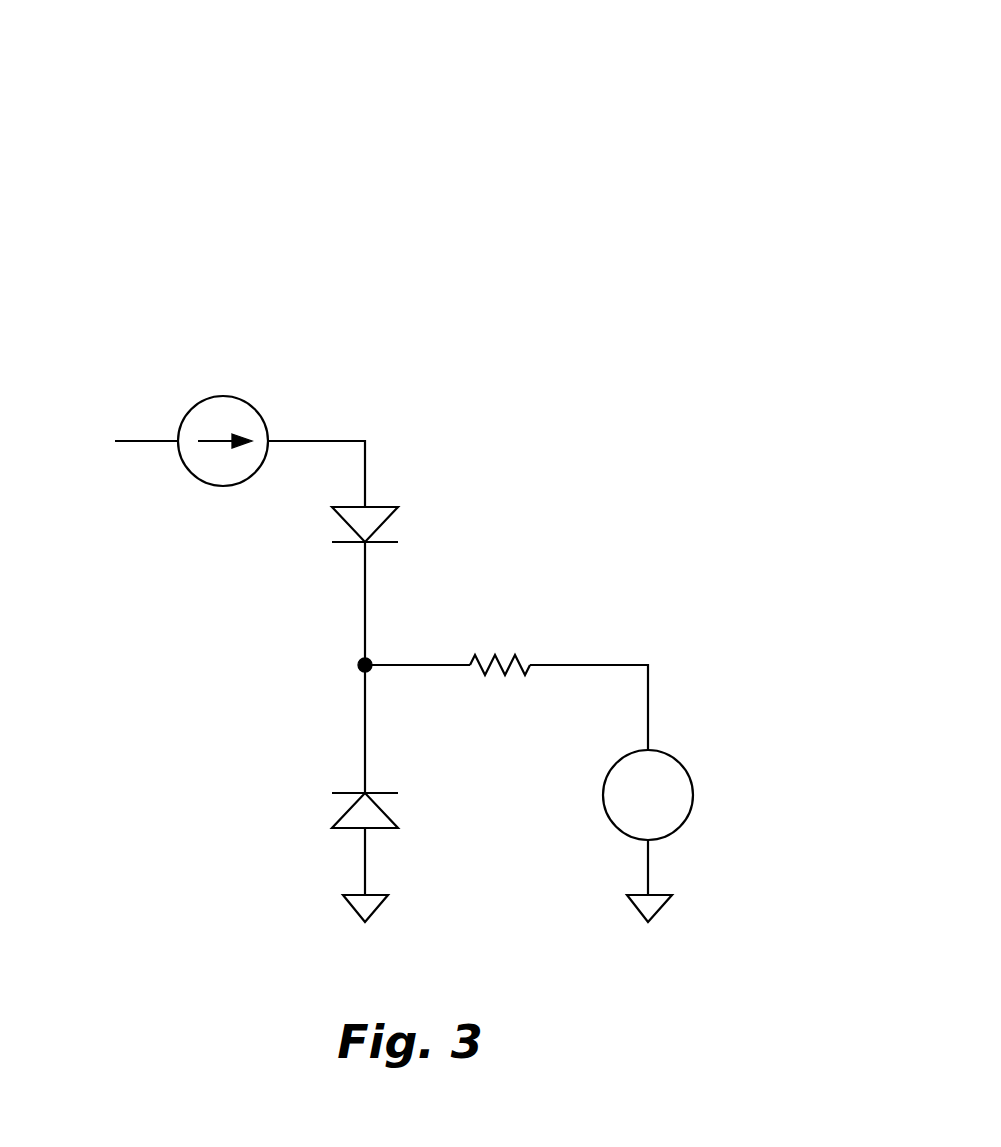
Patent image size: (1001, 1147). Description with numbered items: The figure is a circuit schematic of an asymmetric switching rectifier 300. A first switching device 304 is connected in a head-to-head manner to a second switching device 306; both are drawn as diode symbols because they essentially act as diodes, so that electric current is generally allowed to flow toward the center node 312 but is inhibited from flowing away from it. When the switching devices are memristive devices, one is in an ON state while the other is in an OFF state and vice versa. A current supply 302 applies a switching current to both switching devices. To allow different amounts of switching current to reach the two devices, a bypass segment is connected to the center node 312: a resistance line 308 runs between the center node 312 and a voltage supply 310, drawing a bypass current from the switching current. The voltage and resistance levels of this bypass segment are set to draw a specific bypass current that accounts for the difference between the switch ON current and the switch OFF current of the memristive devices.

The asymmetric switching rectifier 300 is at (205, 192).
The current supply 302 is at (205, 396).
The first switching device 304 is at (388, 521).
The second switching device 306 is at (390, 818).
The resistance line 308 is at (496, 635).
The voltage supply 310 is at (685, 770).
The center node 312 is at (358, 665).